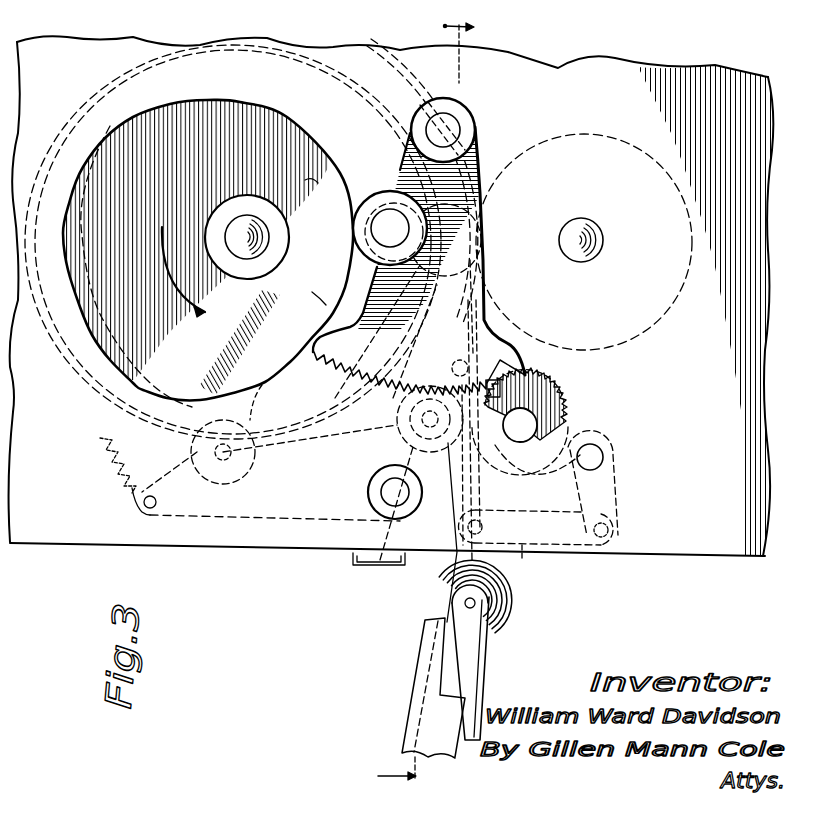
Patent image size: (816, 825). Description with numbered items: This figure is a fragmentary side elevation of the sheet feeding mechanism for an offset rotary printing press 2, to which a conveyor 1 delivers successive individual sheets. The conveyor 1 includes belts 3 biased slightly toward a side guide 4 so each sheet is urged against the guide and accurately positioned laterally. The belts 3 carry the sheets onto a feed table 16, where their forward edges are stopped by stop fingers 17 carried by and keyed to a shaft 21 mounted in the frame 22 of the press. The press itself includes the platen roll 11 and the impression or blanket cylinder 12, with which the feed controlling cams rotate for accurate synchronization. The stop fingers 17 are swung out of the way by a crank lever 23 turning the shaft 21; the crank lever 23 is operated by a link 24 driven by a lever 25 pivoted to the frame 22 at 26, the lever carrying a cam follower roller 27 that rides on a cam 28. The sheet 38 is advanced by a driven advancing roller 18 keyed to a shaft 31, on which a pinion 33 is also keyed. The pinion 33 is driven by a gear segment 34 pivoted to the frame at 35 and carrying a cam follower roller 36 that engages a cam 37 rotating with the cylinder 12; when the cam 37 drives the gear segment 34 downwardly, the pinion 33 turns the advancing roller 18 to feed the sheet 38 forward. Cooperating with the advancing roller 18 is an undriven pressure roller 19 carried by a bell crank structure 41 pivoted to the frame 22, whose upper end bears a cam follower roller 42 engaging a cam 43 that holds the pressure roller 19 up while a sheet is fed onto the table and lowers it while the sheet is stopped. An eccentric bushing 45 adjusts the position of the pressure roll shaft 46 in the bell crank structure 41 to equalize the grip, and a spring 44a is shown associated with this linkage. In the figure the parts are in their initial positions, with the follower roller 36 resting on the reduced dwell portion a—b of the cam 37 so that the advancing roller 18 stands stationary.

The conveyor 1 is at (405, 676).
The offset rotary printing press 2 is at (202, 557).
The belts 3 is at (447, 610).
The side guide 4 is at (420, 660).
The platen roll 11 is at (622, 138).
The impression or blanket cylinder 12 is at (391, 62).
The feed table 16 is at (456, 508).
The stop fingers 17 is at (497, 440).
The advancing roller 18 is at (527, 466).
The pressure roller 19 is at (408, 424).
The shaft 21 is at (594, 457).
The frame 22 is at (748, 338).
The crank lever 23 is at (613, 506).
The link 24 is at (523, 558).
The lever 25 is at (492, 462).
The pivot 26 is at (398, 380).
The cam follower roller 27 is at (446, 277).
The cam 28 is at (410, 128).
The shaft 31 is at (520, 425).
The pinion 33 is at (568, 410).
The gear segment 34 is at (522, 354).
The pivot 35 is at (448, 128).
The cam follower roller 36 is at (376, 200).
The cam 37 is at (261, 119).
The sheet 38 is at (452, 565).
The bell crank structure 41 is at (322, 522).
The cam follower roller 42 is at (252, 470).
The cam 43 is at (247, 307).
The spring 44a is at (100, 445).
The eccentric bushing 45 is at (370, 494).
The shaft 46 is at (393, 522).
The reduced dwell portion a is at (318, 188).
The reduced dwell portion b is at (306, 291).